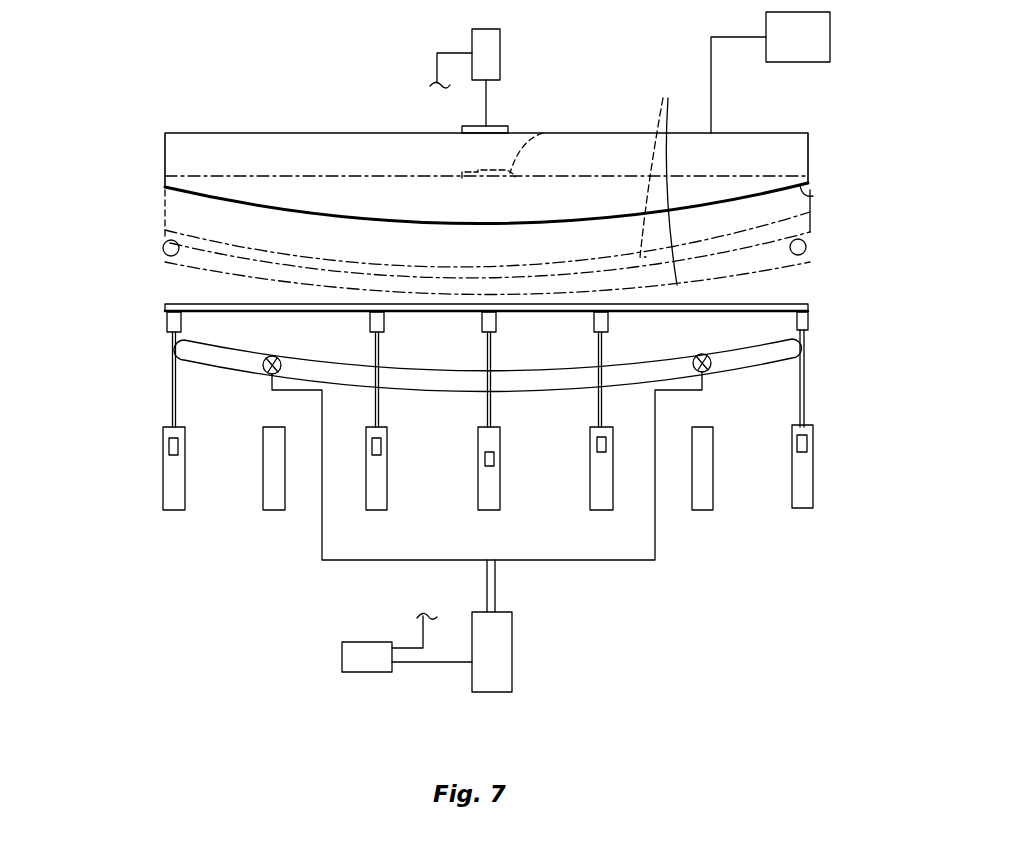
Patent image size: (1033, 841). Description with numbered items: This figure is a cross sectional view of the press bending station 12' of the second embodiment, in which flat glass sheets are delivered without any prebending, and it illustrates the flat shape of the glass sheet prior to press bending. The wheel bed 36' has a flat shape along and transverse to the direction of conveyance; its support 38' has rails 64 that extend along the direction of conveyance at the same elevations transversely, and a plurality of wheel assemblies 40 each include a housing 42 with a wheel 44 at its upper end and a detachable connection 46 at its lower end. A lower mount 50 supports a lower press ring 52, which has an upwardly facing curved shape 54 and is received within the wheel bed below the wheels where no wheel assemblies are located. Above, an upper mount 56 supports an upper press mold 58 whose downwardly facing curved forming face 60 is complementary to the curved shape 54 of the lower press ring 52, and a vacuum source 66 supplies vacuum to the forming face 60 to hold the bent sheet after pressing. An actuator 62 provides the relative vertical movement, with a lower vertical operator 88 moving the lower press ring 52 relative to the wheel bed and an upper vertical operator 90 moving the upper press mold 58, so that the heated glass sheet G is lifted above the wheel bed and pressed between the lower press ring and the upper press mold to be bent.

The press bending station 12' is at (492, 163).
The upper vertical operator 90 is at (500, 52).
The vacuum source 66 is at (830, 38).
The upper mount 56 is at (512, 128).
The glass sheet G is at (658, 178).
The upper press mold 58 is at (810, 175).
The forming face 60 is at (810, 196).
The curved shape 54 is at (810, 216).
The lower press ring 52 is at (790, 270).
The wheel bed 36' is at (544, 324).
The wheel 44 is at (183, 313).
The housing 42 is at (172, 358).
The wheel assembly 40 is at (156, 379).
The support 38' is at (857, 466).
The detachable connection 46 is at (169, 445).
The rail 64 is at (261, 482).
The lower mount 50 is at (322, 545).
The lower vertical operator 88 is at (512, 652).
The actuator 62 is at (332, 653).